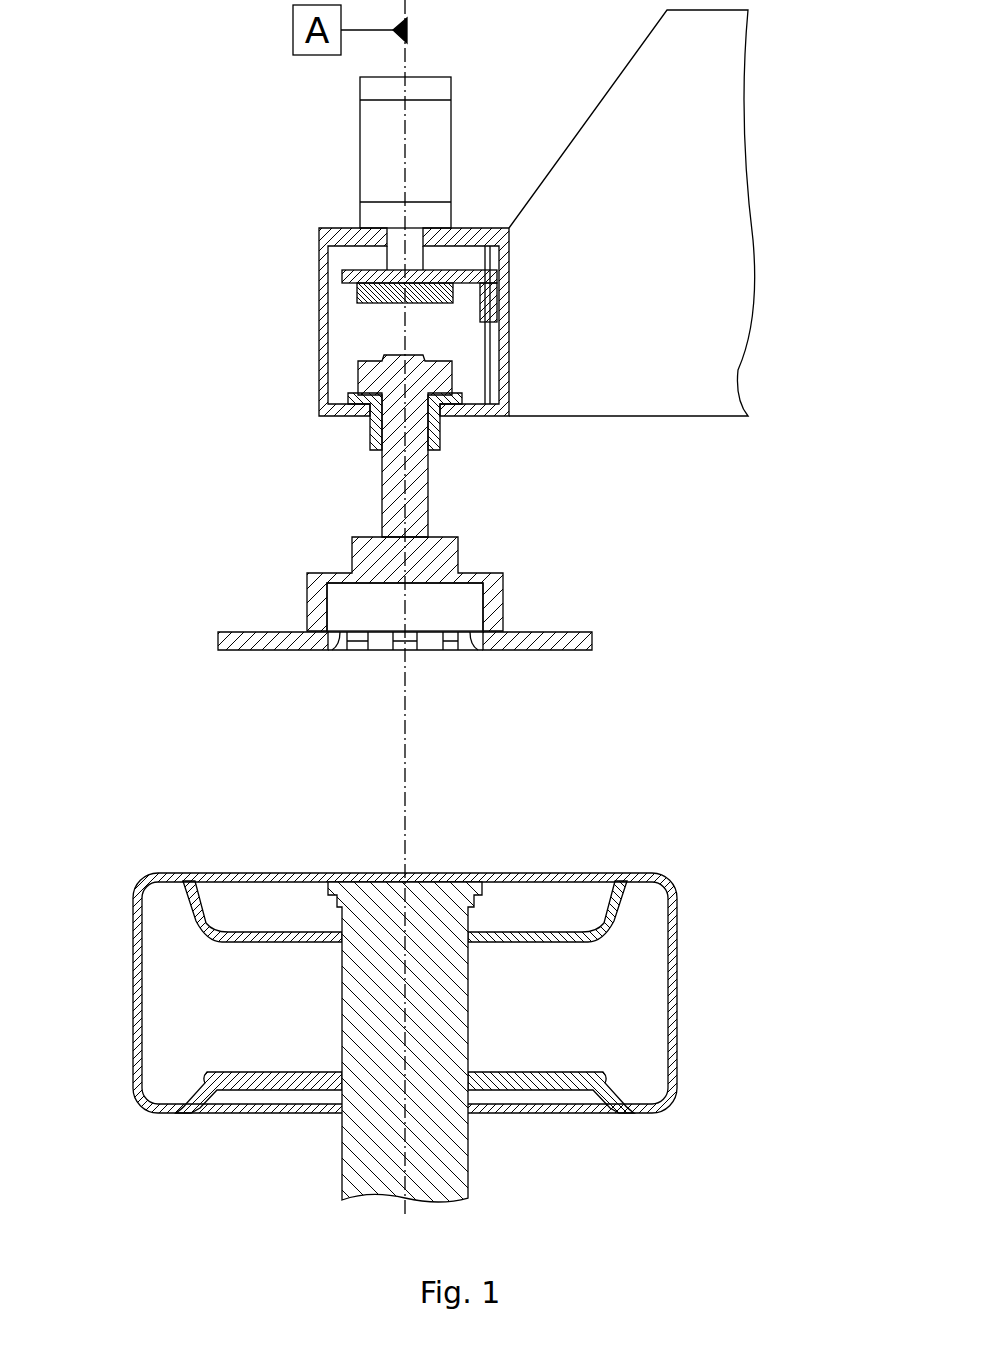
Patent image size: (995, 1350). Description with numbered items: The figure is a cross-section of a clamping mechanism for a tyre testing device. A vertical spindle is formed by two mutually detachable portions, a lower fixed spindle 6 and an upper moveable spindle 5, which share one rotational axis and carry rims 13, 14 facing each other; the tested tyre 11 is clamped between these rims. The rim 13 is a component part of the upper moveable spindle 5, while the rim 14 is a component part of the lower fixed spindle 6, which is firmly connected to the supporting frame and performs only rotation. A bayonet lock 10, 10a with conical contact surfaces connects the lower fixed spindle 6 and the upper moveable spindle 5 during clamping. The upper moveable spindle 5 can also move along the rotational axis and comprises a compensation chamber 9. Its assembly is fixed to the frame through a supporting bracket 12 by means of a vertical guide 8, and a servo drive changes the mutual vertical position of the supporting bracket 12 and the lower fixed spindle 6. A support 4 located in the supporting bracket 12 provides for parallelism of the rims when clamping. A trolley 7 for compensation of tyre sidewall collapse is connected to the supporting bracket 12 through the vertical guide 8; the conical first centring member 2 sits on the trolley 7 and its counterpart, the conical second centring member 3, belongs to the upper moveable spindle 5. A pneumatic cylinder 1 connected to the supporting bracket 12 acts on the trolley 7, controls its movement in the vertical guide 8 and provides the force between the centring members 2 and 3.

The pneumatic cylinder 1 is at (388, 186).
The conical first centring member 2 is at (353, 295).
The conical second centring member 3 is at (396, 361).
The support of the upper moveable spindle 4 is at (352, 398).
The upper moveable spindle 5 is at (352, 557).
The lower fixed spindle 6 is at (360, 1013).
The trolley 7 is at (497, 283).
The vertical guide 8 is at (488, 343).
The compensation chamber 9 is at (447, 599).
The bayonet lock 10 is at (418, 637).
The bayonet lock 10a is at (480, 885).
The tested tyre 11 is at (633, 1071).
The supporting bracket 12 is at (470, 227).
The rim of the upper moveable spindle 13 is at (228, 650).
The rim of the lower fixed spindle 14 is at (277, 1082).